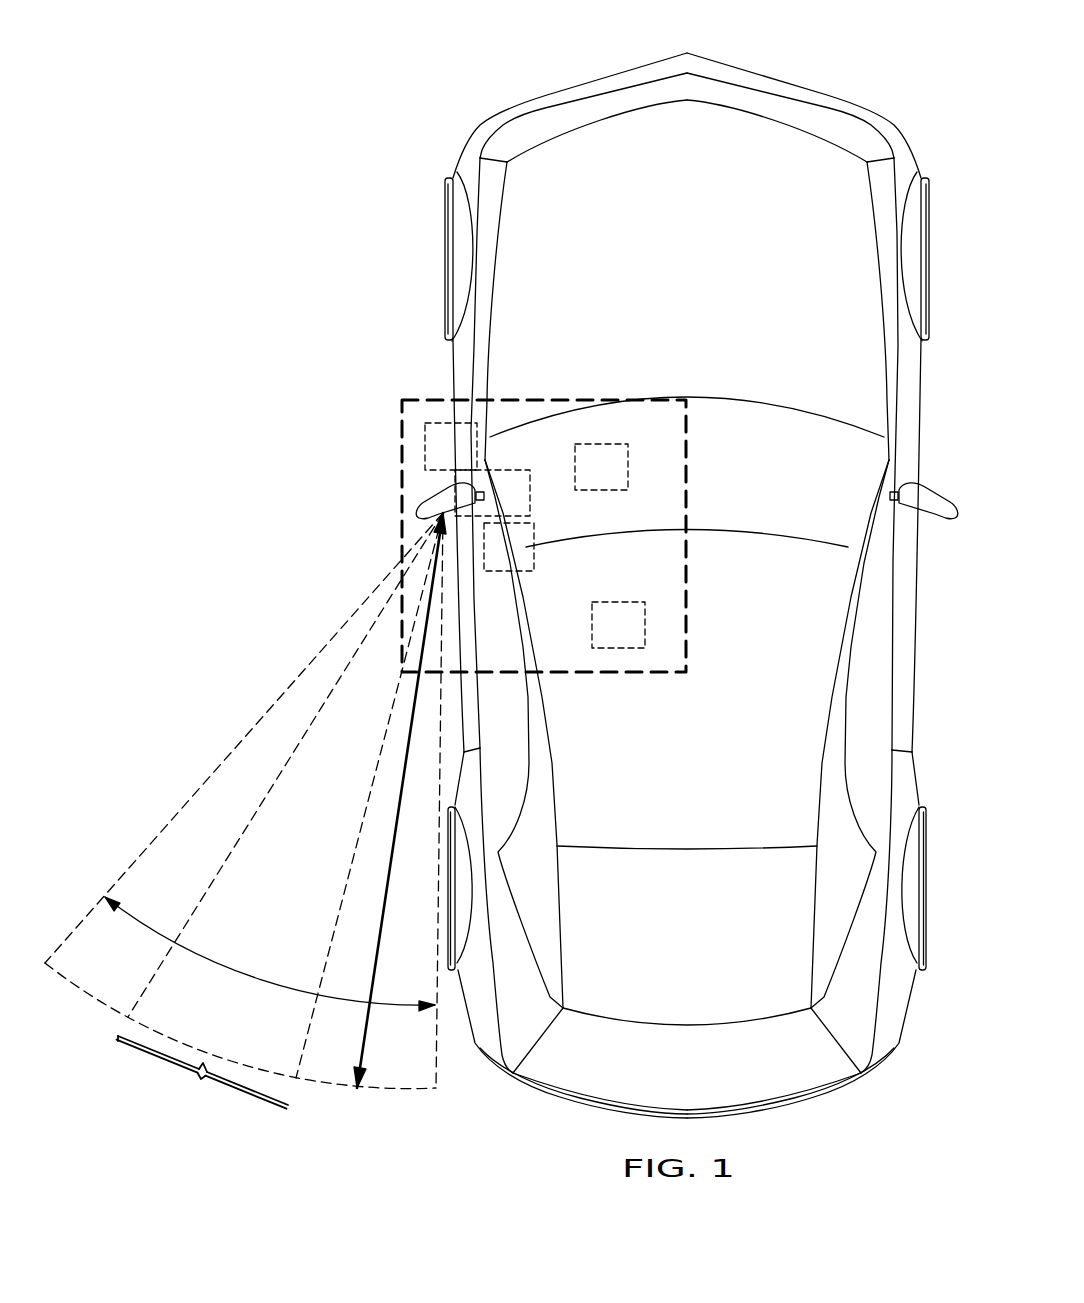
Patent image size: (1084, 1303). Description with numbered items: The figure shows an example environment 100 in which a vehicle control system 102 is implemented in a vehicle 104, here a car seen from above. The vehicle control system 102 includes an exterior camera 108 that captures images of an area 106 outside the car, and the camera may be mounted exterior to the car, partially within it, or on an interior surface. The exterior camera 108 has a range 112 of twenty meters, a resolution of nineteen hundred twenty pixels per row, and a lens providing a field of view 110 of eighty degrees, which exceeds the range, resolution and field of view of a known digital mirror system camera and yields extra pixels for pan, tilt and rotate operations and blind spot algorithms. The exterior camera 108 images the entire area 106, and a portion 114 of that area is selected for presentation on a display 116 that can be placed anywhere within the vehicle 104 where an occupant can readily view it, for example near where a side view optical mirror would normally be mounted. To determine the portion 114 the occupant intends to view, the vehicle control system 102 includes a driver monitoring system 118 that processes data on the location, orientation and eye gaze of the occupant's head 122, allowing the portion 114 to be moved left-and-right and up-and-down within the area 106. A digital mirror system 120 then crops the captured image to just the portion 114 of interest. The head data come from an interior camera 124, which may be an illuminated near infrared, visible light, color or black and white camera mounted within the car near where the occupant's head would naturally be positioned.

The environment 100 is at (501, 588).
The vehicle control system 102 is at (576, 397).
The vehicle 104 is at (597, 73).
The area exterior to the car 106 is at (206, 746).
The exterior camera 108 is at (425, 487).
The field of view 110 is at (247, 975).
The range 112 is at (365, 1048).
The portion of the area 114 is at (203, 1072).
The display 116 is at (530, 499).
The driver monitoring system 118 is at (425, 437).
The digital mirror system 120 is at (628, 463).
The occupant's head 122 is at (624, 602).
The interior camera 124 is at (534, 554).